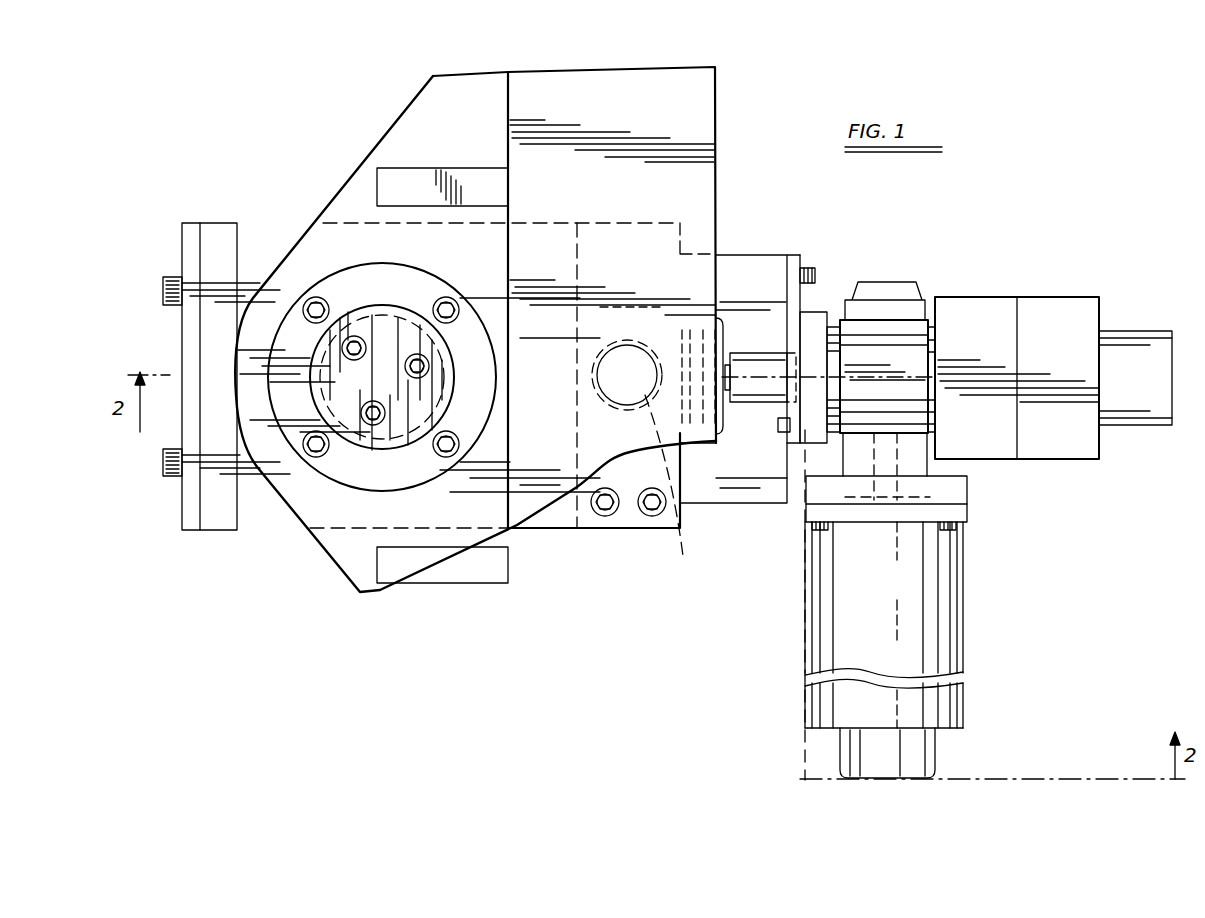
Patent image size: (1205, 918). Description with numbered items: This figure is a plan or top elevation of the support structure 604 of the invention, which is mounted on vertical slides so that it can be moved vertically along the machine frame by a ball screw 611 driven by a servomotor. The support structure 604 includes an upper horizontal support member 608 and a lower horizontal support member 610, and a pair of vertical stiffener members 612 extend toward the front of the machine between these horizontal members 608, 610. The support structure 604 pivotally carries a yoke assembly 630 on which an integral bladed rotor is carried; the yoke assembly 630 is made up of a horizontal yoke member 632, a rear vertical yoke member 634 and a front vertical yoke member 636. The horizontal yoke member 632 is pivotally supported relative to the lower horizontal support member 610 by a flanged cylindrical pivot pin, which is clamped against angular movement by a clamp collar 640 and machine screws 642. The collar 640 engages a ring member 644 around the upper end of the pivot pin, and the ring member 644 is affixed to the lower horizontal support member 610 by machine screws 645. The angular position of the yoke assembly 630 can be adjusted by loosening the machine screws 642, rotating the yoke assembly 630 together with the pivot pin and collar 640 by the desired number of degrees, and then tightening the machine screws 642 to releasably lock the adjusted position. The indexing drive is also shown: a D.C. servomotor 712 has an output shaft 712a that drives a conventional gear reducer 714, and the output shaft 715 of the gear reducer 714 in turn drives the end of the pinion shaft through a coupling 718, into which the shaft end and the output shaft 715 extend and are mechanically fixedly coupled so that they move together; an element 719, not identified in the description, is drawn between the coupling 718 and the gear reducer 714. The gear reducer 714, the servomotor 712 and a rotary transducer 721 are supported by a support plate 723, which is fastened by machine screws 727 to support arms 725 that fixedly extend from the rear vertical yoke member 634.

The support structure 604 is at (570, 58).
The upper horizontal support member 608 is at (706, 114).
The lower horizontal support member 610 is at (348, 205).
The ball screw 611 is at (676, 492).
The vertical stiffener members 612 is at (420, 170).
The yoke assembly 630 is at (245, 208).
The horizontal yoke member 632 is at (600, 522).
The rear vertical yoke member 634 is at (648, 222).
The front vertical yoke member 636 is at (182, 232).
The clamp collar 640 is at (370, 448).
The machine screws 642 is at (362, 342).
The ring member 644 is at (378, 268).
The machine screws 645 is at (458, 302).
The D.C. servomotor 712 is at (957, 605).
The output shaft 712a is at (890, 467).
The gear reducer 714 is at (905, 325).
The output shaft 715 is at (822, 377).
The coupling 718 is at (757, 355).
The bearing block 719 is at (824, 312).
The rotary transducer 721 is at (1046, 300).
The support plate 723 is at (795, 255).
The support arms 725 is at (750, 258).
The machine screws 727 is at (818, 270).